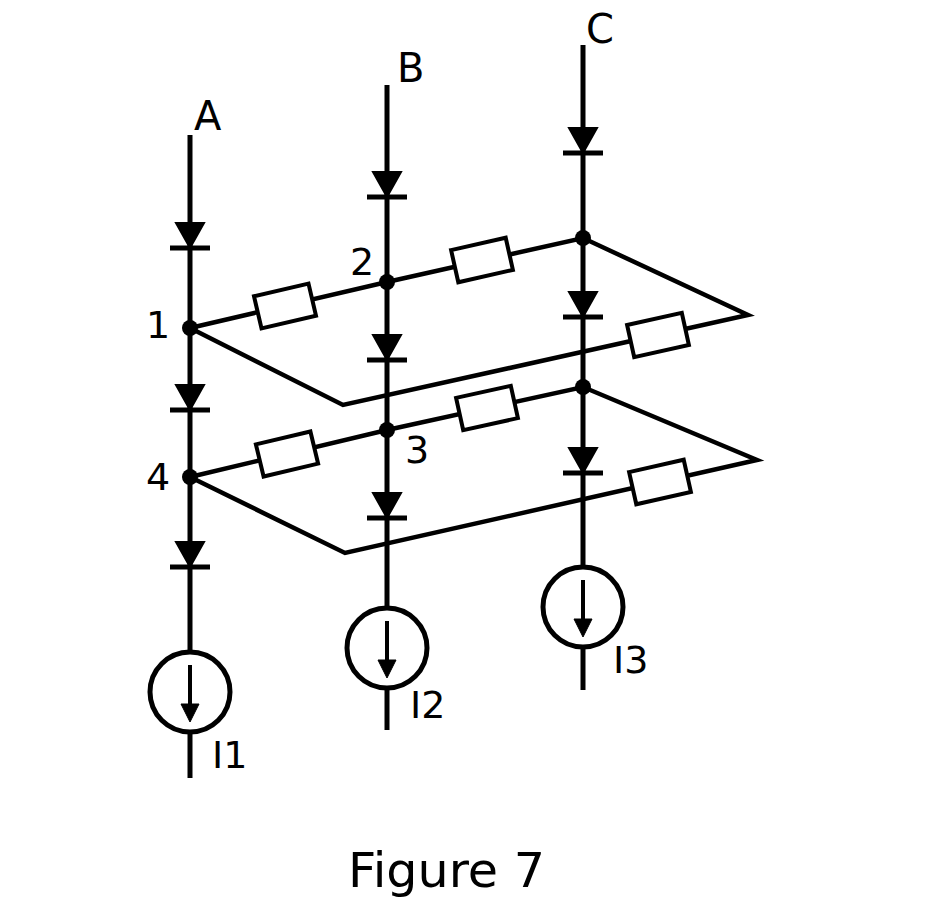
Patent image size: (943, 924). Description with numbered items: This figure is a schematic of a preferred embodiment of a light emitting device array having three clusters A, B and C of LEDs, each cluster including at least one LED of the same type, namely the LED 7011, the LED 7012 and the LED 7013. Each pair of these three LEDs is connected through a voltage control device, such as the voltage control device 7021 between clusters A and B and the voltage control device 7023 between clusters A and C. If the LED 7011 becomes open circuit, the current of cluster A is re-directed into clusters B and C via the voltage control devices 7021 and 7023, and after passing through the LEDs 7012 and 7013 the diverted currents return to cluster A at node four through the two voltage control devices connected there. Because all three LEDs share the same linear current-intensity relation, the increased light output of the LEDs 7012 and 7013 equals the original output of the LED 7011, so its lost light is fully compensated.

The LED 7011 is at (168, 398).
The LED 7012 is at (406, 342).
The LED 7013 is at (600, 300).
The voltage control device 7021 is at (295, 276).
The voltage control device 7023 is at (688, 356).